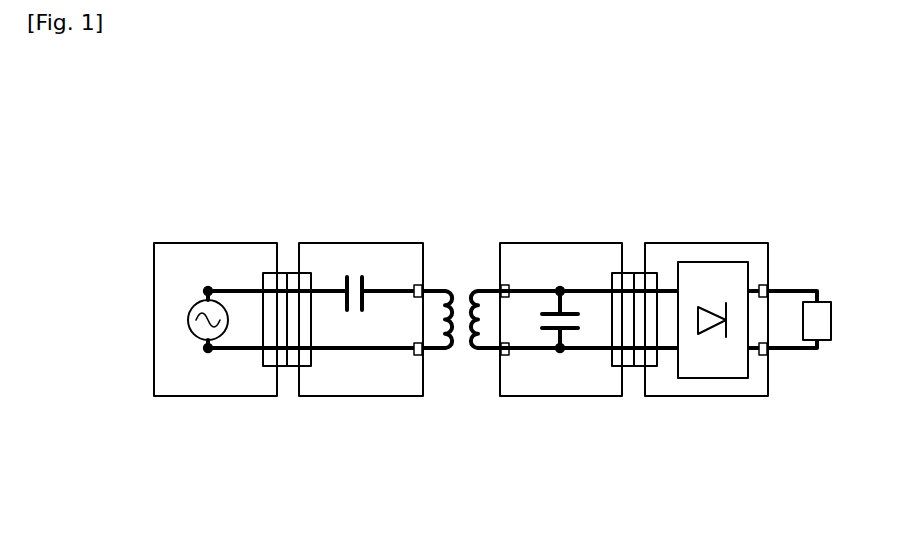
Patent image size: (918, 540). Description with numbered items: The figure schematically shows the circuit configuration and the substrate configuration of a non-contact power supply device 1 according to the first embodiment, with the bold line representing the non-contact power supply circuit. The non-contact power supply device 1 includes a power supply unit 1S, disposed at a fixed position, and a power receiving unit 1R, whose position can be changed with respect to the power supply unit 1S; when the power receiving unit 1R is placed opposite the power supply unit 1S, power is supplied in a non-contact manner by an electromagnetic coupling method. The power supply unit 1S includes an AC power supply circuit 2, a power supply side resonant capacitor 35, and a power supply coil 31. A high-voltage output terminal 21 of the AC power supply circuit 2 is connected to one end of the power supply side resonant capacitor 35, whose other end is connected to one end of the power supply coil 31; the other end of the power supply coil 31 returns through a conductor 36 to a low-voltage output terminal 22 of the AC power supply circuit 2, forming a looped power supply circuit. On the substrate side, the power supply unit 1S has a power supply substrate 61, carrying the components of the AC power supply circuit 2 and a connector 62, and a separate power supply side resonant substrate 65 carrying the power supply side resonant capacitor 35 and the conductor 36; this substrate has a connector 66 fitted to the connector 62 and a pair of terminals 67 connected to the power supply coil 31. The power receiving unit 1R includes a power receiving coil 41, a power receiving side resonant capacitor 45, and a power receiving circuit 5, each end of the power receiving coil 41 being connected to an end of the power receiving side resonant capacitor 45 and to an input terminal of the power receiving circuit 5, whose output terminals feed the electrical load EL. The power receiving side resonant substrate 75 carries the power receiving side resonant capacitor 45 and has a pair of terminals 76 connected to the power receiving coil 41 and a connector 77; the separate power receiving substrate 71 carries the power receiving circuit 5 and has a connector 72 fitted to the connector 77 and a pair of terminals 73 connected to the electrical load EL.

The non-contact power supply device 1 is at (389, 150).
The power supply unit 1S is at (150, 426).
The power receiving unit 1R is at (796, 413).
The AC power supply circuit 2 is at (188, 322).
The high-voltage output terminal 21 is at (208, 285).
The low-voltage output terminal 22 is at (208, 355).
The power supply coil 31 is at (444, 285).
The power supply side resonant capacitor 35 is at (354, 277).
The conductor 36 is at (395, 352).
The power receiving coil 41 is at (483, 285).
The power receiving side resonant capacitor 45 is at (533, 320).
The power receiving circuit 5 is at (710, 277).
The power supply substrate 61 is at (238, 390).
The connector 62 is at (279, 366).
The power supply side resonant substrate 65 is at (360, 390).
The connector 66 is at (295, 366).
The pair of terminals 67 is at (425, 356).
The power receiving substrate 71 is at (708, 390).
The connector 72 is at (640, 366).
The pair of terminals 73 is at (768, 355).
The power receiving side resonant substrate 75 is at (535, 390).
The pair of terminals 76 is at (503, 358).
The connector 77 is at (625, 366).
The electrical load EL is at (820, 322).